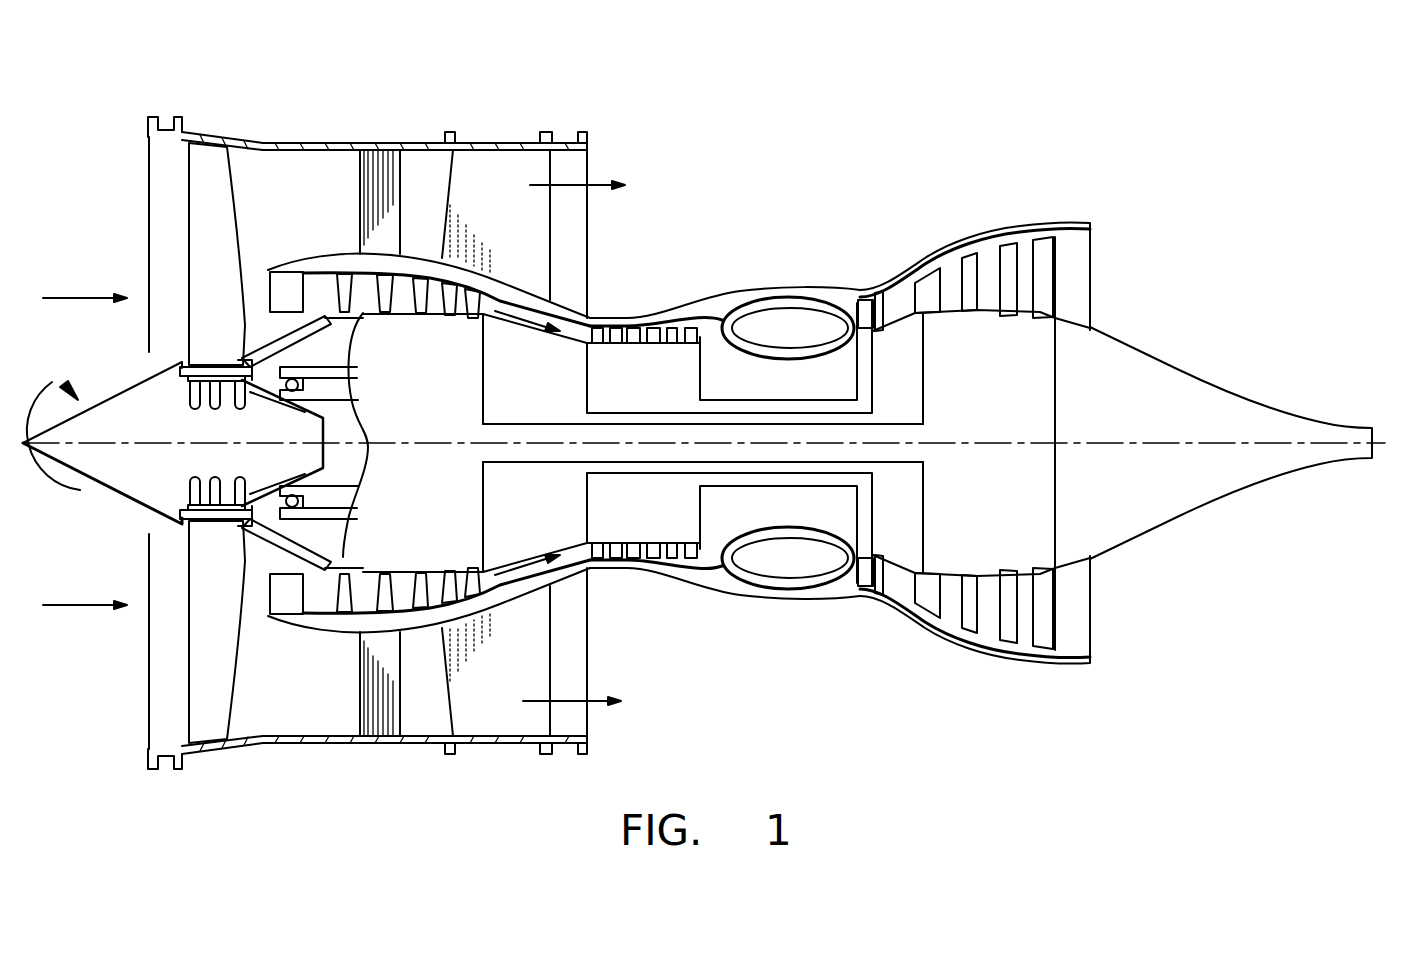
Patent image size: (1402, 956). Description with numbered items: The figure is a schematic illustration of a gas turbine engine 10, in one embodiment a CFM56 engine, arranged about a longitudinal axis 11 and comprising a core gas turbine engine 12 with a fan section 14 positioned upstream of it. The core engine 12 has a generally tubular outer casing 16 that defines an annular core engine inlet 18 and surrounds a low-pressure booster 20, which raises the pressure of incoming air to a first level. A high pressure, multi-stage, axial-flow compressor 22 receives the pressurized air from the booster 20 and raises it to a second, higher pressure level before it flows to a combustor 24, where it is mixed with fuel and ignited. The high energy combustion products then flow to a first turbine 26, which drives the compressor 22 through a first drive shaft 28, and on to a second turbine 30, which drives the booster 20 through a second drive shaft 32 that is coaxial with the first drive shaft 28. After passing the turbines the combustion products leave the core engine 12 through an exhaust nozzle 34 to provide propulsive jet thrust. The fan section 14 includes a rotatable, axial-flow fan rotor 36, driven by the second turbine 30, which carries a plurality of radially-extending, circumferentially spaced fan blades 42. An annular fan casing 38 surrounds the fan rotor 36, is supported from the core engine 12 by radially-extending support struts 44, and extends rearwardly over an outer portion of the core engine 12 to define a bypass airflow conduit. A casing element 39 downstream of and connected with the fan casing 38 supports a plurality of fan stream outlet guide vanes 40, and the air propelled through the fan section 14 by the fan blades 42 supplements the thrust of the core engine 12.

The gas turbine engine 10 is at (618, 98).
The longitudinal axis 11 is at (1110, 443).
The core gas turbine engine 12 is at (737, 265).
The fan section 14 is at (218, 108).
The outer casing 16 is at (682, 596).
The core engine inlet 18 is at (262, 600).
The low-pressure booster 20 is at (449, 378).
The high pressure compressor 22 is at (602, 392).
The combustor 24 is at (811, 337).
The first turbine 26 is at (866, 308).
The first drive shaft 28 is at (735, 402).
The second turbine 30 is at (1020, 376).
The second drive shaft 32 is at (682, 456).
The exhaust nozzle 34 is at (1096, 233).
The fan rotor 36 is at (188, 382).
The fan casing 38 is at (293, 143).
The casing element 39 is at (497, 143).
The fan stream outlet guide vanes 40 is at (540, 220).
The fan blades 42 is at (237, 220).
The support struts 44 is at (372, 236).